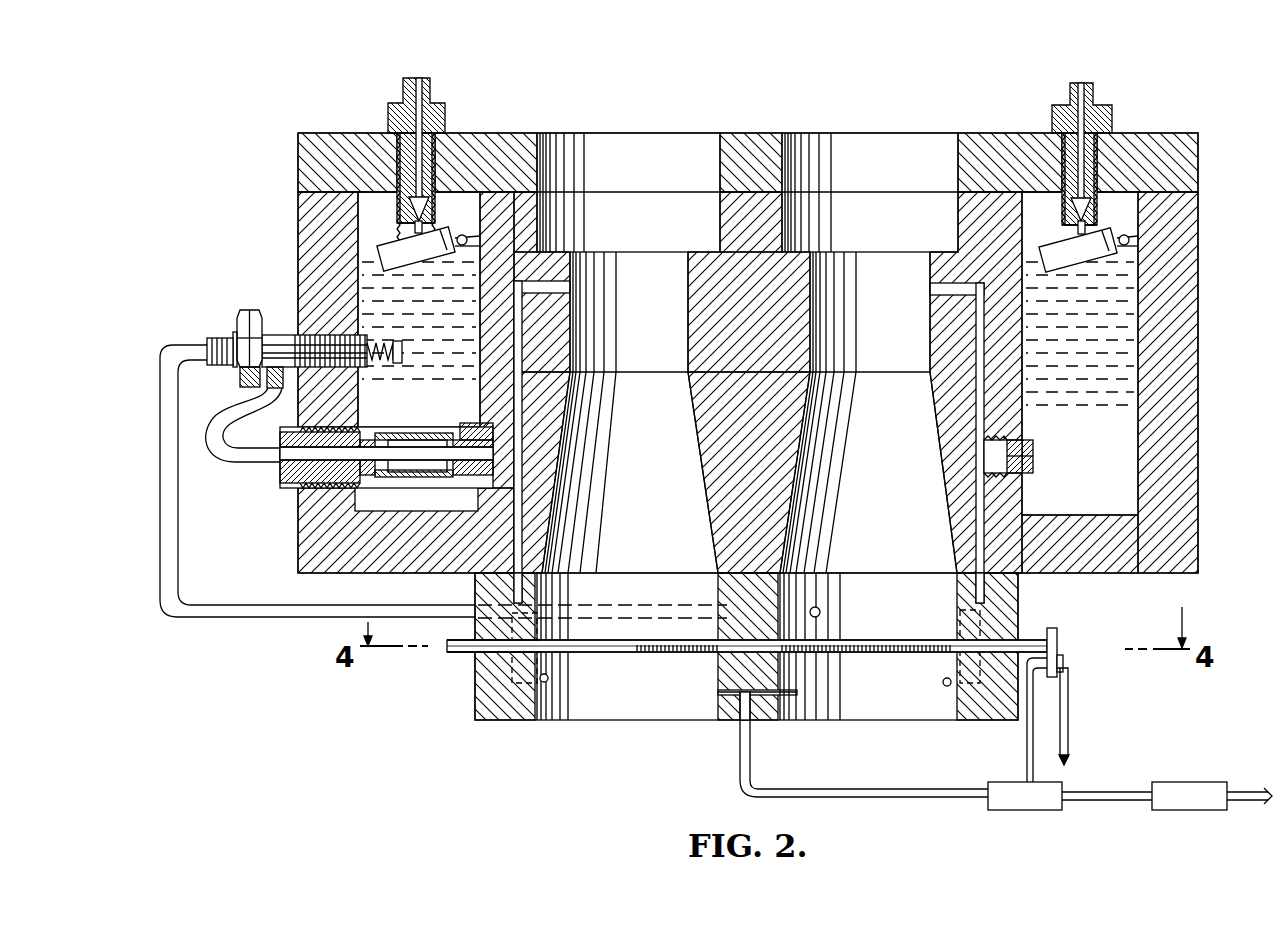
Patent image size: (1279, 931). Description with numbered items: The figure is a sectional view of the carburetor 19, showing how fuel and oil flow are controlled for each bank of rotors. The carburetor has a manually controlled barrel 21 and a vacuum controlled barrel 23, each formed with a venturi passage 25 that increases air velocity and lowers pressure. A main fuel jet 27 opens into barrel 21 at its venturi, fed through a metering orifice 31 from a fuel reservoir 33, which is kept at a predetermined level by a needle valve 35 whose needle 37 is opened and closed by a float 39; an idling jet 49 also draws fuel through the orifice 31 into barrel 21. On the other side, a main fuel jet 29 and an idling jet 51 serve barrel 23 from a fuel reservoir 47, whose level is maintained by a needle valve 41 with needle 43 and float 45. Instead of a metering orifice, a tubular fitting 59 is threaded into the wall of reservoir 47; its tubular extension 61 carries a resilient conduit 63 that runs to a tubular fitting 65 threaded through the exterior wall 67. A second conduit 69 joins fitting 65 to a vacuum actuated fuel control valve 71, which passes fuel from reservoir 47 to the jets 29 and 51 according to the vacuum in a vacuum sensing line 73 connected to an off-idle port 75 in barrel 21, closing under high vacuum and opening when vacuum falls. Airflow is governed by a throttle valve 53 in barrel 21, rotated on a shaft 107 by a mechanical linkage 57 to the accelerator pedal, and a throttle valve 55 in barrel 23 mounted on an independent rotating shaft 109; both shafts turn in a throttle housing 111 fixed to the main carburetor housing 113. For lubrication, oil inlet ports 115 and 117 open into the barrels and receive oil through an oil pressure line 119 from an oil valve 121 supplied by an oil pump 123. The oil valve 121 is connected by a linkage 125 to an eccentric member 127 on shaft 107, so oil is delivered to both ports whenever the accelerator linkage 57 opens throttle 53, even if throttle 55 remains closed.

The carburetor 19 is at (1204, 256).
The manually controlled barrel 21 is at (882, 481).
The vacuum controlled barrel 23 is at (645, 481).
The venturi passage 25 is at (688, 302).
The main fuel jet 27 is at (928, 297).
The main fuel jet 29 is at (573, 293).
The metering orifice 31 is at (1036, 456).
The fuel reservoir 33 is at (1140, 320).
The needle valve 35 is at (1053, 108).
The needle 37 is at (1071, 210).
The float 39 is at (1063, 247).
The needle valve 41 is at (446, 108).
The needle 43 is at (398, 207).
The float 45 is at (398, 242).
The fuel reservoir 47 is at (358, 297).
The idling jet 49 is at (946, 686).
The idling jet 51 is at (548, 682).
The throttle valve 53 is at (845, 655).
The throttle valve 55 is at (615, 655).
The mechanical linkage 57 is at (1068, 735).
The tubular fitting 59 is at (465, 422).
The tubular extension 61 is at (442, 474).
The conduit 63 is at (403, 433).
The tubular fitting 65 is at (280, 474).
The exterior wall 67 is at (298, 542).
The second conduit 69 is at (212, 458).
The vacuum actuated fuel control valve 71 is at (250, 310).
The vacuum sensing line 73 is at (162, 487).
The port 75 is at (822, 612).
The shaft 107 is at (1049, 628).
The rotating shaft 109 is at (450, 655).
The throttle housing 111 is at (500, 720).
The main carburetor housing 113 is at (1190, 497).
The oil inlet port 115 is at (718, 692).
The oil inlet port 117 is at (785, 720).
The oil pressure line 119 is at (830, 789).
The oil valve 121 is at (1010, 810).
The oil pump 123 is at (1180, 810).
The linkage 125 is at (1027, 748).
The eccentric member 127 is at (1064, 651).